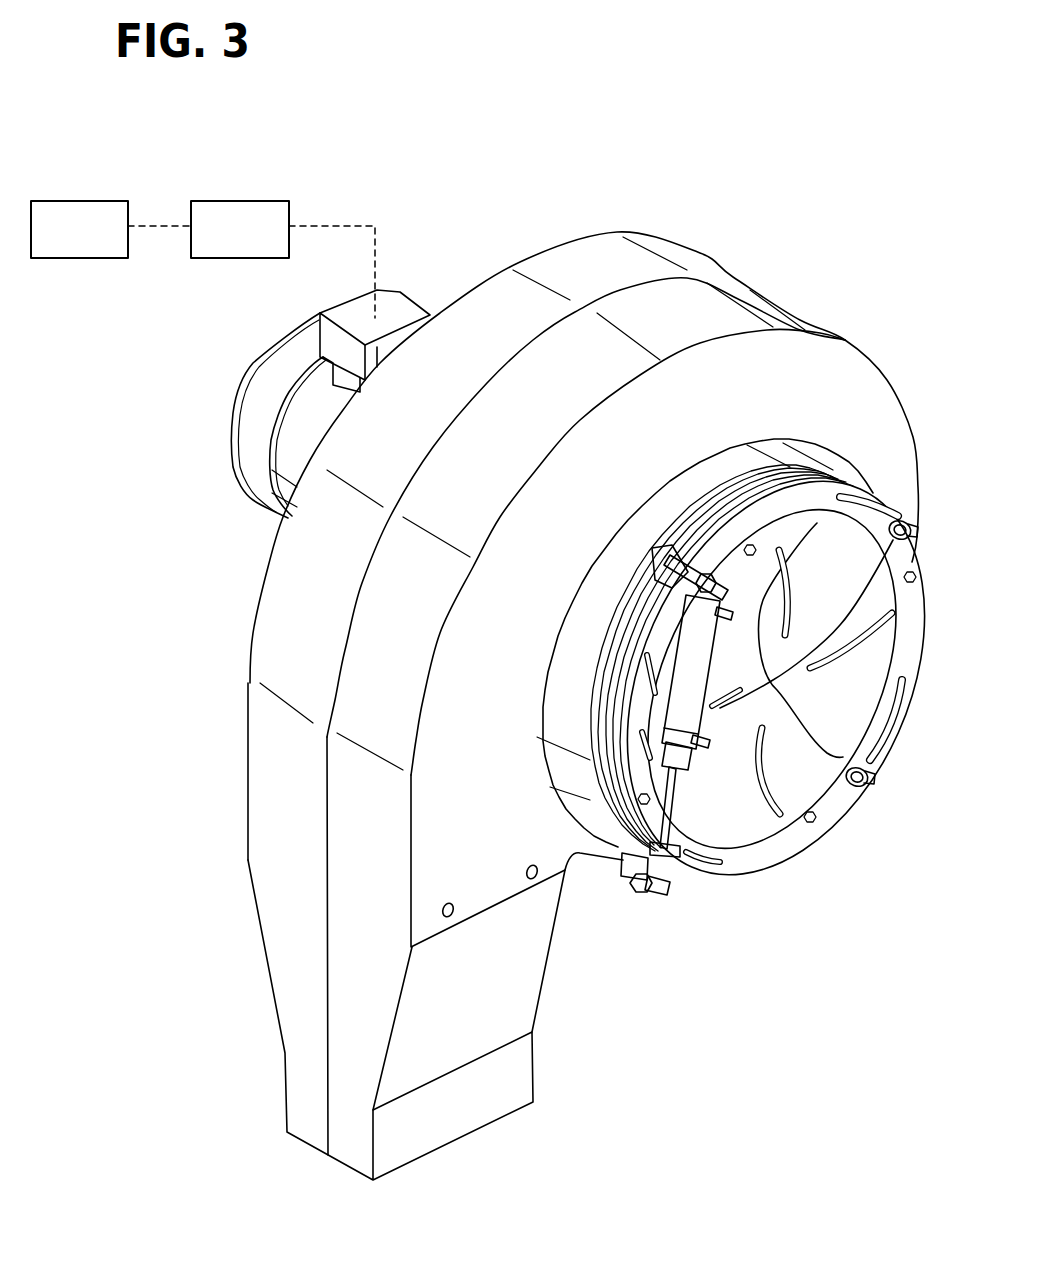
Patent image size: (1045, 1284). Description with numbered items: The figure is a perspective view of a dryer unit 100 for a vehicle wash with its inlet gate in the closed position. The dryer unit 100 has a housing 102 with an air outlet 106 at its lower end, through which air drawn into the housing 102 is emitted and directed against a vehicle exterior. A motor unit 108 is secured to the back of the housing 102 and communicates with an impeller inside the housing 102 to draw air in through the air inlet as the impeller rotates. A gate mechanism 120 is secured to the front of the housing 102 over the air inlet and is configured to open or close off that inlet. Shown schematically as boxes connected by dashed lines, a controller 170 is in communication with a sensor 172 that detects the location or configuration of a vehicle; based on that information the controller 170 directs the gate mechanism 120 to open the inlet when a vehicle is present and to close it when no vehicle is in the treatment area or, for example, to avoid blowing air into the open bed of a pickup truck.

The dryer unit 100 is at (747, 100).
The housing 102 is at (597, 252).
The air outlet 106 is at (315, 1150).
The motor unit 108 is at (292, 358).
The gate mechanism 120 is at (877, 817).
The controller 170 is at (258, 247).
The sensor 172 is at (98, 247).